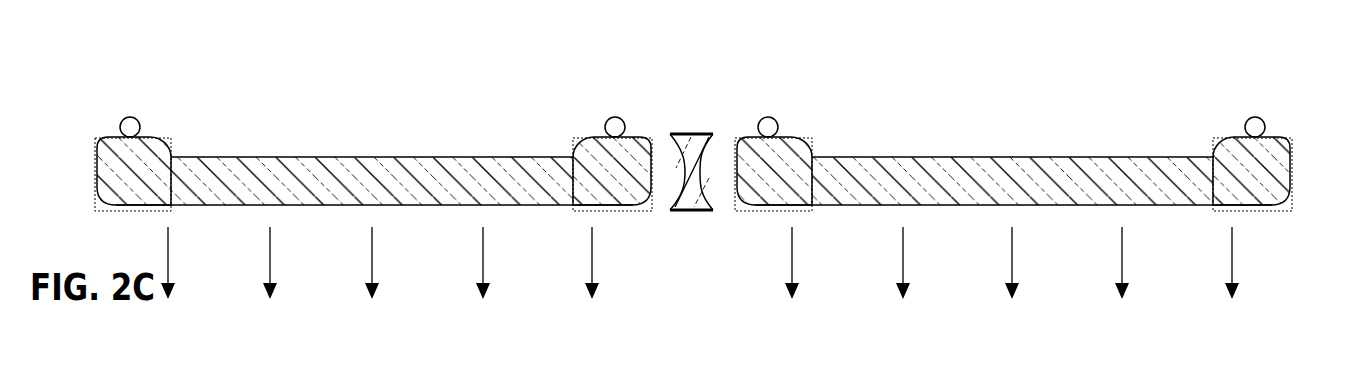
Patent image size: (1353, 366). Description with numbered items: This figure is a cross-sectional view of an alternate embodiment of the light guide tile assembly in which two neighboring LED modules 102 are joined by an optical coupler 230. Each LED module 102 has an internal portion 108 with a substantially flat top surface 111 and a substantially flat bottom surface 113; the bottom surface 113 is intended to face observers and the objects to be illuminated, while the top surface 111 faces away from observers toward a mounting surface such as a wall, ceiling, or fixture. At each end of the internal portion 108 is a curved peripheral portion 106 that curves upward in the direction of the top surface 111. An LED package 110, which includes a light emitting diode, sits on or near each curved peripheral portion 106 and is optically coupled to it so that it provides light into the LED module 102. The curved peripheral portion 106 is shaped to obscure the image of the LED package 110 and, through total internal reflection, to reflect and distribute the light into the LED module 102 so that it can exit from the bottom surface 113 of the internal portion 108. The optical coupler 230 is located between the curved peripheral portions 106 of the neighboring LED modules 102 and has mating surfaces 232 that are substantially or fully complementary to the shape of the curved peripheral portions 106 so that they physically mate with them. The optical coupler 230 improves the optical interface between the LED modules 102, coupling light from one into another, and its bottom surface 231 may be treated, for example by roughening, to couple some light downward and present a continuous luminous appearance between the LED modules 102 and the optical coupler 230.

The LED module 102 is at (270, 133).
The curved peripheral portion 106 is at (97, 155).
The internal portion 108 is at (322, 157).
The LED package 110 is at (131, 116).
The top surface 111 is at (435, 157).
The bottom surface 113 is at (425, 207).
The optical coupler 230 is at (692, 134).
The bottom surface of optical coupler 231 is at (683, 212).
The mating surface 232 is at (684, 172).